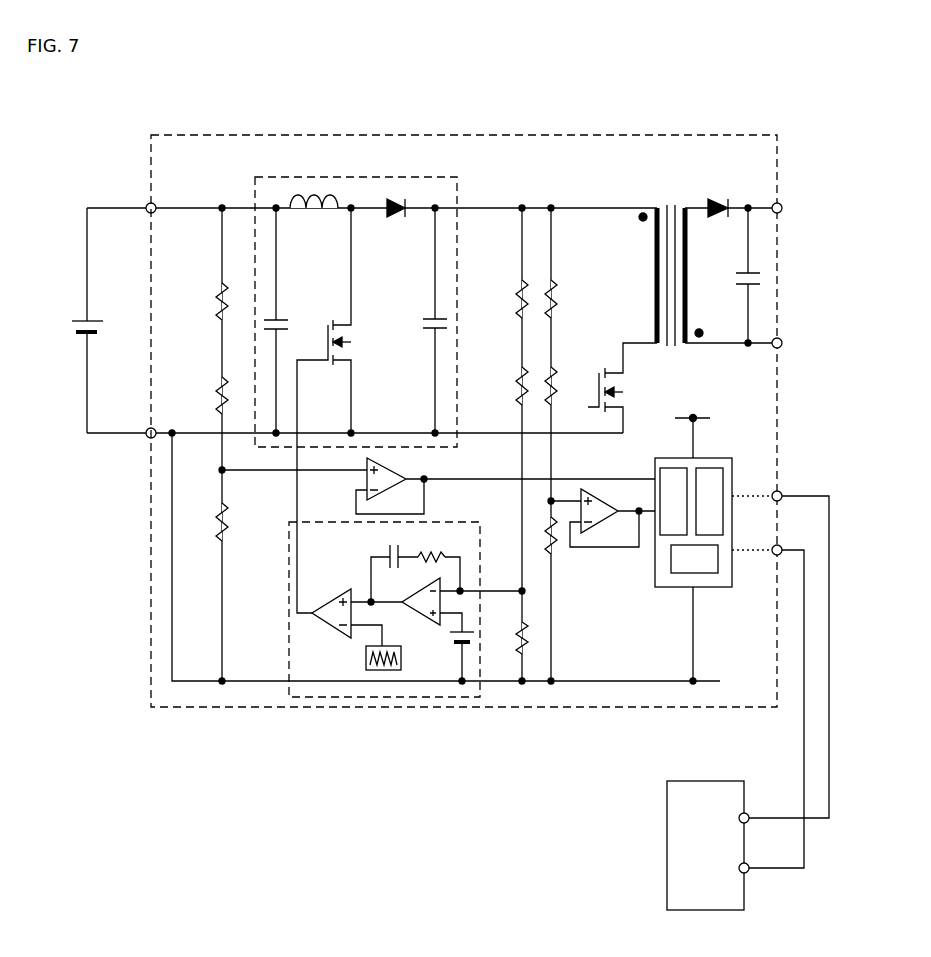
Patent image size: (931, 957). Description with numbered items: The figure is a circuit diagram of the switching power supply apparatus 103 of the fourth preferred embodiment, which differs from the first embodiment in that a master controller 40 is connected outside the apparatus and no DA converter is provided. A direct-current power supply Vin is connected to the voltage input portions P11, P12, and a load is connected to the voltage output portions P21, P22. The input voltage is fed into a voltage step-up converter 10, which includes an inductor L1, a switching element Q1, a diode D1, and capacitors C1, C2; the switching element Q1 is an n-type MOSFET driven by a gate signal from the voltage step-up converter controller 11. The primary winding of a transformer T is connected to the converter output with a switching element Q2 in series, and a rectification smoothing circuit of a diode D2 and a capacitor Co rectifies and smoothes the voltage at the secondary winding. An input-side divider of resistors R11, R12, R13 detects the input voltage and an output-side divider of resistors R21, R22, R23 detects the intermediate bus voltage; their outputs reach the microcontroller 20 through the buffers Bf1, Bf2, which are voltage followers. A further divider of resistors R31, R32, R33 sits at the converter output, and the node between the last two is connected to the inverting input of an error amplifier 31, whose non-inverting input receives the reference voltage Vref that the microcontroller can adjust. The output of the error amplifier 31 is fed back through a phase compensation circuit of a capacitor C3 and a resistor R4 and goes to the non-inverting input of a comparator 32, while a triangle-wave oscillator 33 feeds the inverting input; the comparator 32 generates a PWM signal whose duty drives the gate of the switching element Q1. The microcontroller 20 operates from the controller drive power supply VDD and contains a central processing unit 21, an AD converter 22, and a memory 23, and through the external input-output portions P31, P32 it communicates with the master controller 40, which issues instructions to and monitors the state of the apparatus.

The switching power supply apparatus 103 is at (172, 135).
The voltage step-up converter 10 is at (460, 192).
The voltage step-up converter controller 11 is at (289, 563).
The microcontroller 20 is at (732, 458).
The central processing unit 21 is at (710, 573).
The AD converter 22 is at (660, 470).
The memory 23 is at (725, 490).
The error amplifier 31 is at (412, 590).
The comparator 32 is at (328, 627).
The triangle-wave oscillator 33 is at (365, 660).
The master controller 40 is at (678, 781).
The direct-current power supply Vin is at (77, 314).
The voltage input portion P11 is at (135, 198).
The voltage input portion P12 is at (135, 445).
The voltage output portion P21 is at (792, 200).
The voltage output portion P22 is at (792, 333).
The external input-output portion P31 is at (780, 645).
The external input-output portion P32 is at (775, 697).
The resistor R11 is at (204, 301).
The resistor R12 is at (204, 395).
The resistor R13 is at (204, 522).
The resistor R21 is at (566, 295).
The resistor R22 is at (566, 378).
The resistor R23 is at (566, 545).
The resistor R31 is at (506, 290).
The resistor R32 is at (506, 377).
The resistor R33 is at (507, 627).
The resistor R4 is at (437, 539).
The capacitor C1 is at (283, 320).
The capacitor C2 is at (428, 320).
The capacitor C3 is at (375, 539).
The capacitor Co is at (741, 275).
The inductor L1 is at (314, 219).
The diode D1 is at (401, 220).
The diode D2 is at (724, 197).
The switching element Q1 is at (337, 410).
The switching element Q2 is at (628, 384).
The transformer T is at (674, 261).
The controller drive power supply VDD is at (690, 426).
The buffer Bf1 is at (505, 486).
The buffer Bf2 is at (603, 517).
The reference voltage Vref is at (433, 657).